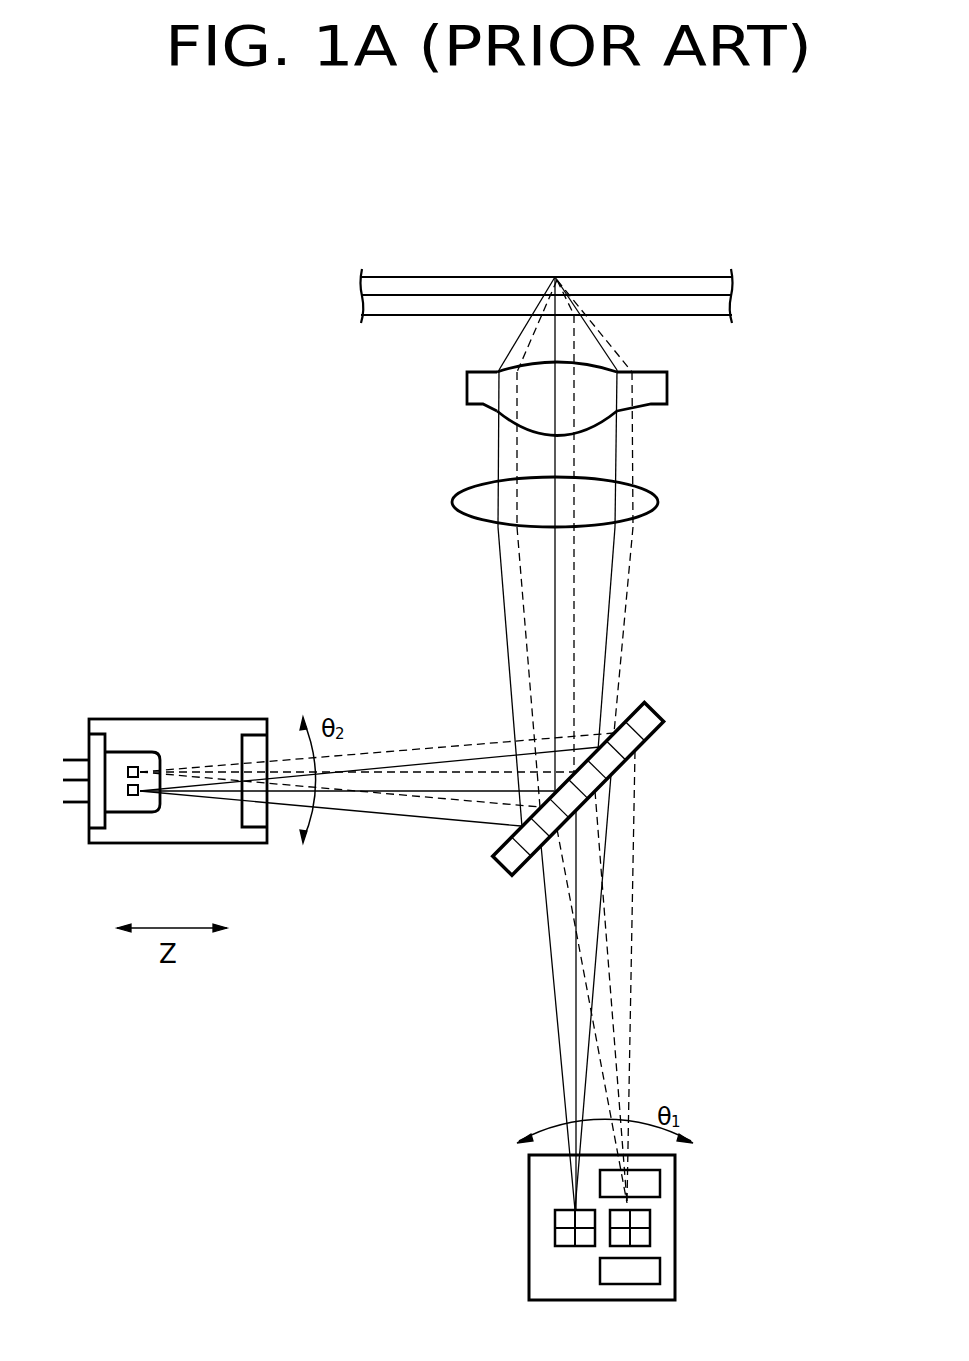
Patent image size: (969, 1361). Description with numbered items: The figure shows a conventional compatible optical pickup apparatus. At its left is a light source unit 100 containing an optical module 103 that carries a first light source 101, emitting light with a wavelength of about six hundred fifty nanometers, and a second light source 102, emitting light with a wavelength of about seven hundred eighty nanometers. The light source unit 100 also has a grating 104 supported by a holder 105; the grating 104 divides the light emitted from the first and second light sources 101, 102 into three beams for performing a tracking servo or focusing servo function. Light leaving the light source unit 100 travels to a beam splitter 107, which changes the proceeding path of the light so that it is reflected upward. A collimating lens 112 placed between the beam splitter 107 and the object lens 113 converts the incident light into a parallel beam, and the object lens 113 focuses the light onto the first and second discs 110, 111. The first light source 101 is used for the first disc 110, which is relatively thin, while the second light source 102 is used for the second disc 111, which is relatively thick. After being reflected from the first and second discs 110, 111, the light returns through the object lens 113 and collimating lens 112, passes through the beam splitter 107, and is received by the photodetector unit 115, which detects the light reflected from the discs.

The light source unit 100 is at (159, 707).
The first light source 101 is at (135, 765).
The second light source 102 is at (133, 796).
The optical module 103 is at (120, 750).
The grating 104 is at (258, 742).
The holder 105 is at (205, 719).
The beam splitter 107 is at (658, 706).
The first disc 110 is at (728, 307).
The second disc 111 is at (727, 284).
The collimating lens 112 is at (658, 502).
The object lens 113 is at (667, 388).
The photodetector unit 115 is at (517, 1205).